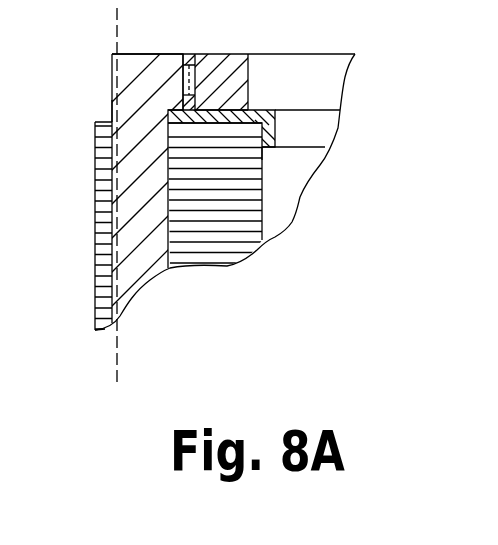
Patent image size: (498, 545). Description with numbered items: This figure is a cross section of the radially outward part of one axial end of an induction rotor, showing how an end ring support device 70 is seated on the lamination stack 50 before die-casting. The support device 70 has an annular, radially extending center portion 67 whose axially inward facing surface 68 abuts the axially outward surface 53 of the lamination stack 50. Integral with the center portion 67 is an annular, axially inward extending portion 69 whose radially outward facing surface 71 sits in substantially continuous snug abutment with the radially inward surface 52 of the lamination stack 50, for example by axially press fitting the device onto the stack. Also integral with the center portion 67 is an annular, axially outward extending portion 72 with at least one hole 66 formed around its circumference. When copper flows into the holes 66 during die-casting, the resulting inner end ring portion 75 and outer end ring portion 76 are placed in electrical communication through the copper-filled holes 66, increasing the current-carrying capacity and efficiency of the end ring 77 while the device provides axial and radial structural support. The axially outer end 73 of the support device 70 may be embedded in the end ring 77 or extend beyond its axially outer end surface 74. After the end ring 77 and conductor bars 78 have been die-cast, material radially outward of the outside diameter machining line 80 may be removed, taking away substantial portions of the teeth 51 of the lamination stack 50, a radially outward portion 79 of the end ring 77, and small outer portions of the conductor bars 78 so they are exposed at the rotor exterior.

The lamination stack 50 is at (229, 240).
The teeth 51 is at (102, 305).
The radially inward surface 52 is at (263, 221).
The axially outward surface 53 is at (183, 98).
The hole 66 is at (192, 83).
The center portion 67 is at (237, 111).
The axially inward facing surface 68 is at (280, 111).
The axially inward extending portion 69 is at (237, 112).
The end ring support device 70 is at (198, 107).
The radially outward facing surface 71 is at (262, 147).
The axially outward extending portion 72 is at (210, 58).
The axially outer end 73 is at (185, 55).
The axially outer end surface 74 is at (140, 54).
The inner end ring portion 75 is at (238, 111).
The outer end ring portion 76 is at (128, 65).
The end ring 77 is at (135, 97).
The conductor bar 78 is at (130, 243).
The radially outward portion 79 is at (112, 118).
The outside diameter machining line 80 is at (117, 375).